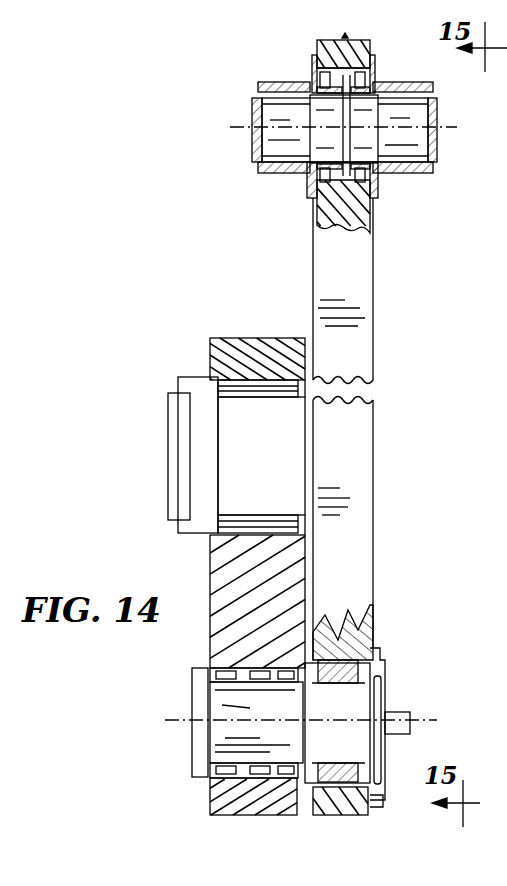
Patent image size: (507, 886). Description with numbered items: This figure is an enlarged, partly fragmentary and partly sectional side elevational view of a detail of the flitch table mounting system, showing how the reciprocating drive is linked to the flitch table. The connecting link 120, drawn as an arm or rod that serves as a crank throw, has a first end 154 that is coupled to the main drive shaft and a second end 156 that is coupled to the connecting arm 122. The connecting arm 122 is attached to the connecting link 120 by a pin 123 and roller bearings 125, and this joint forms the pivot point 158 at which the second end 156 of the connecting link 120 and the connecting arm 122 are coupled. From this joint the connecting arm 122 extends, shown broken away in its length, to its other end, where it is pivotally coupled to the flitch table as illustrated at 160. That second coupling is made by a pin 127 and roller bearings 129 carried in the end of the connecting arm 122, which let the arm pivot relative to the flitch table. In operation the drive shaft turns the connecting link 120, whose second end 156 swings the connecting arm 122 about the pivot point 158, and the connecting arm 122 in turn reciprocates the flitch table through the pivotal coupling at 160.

The connecting link 120 is at (200, 570).
The connecting arm 122 is at (360, 290).
The pin 123 is at (255, 740).
The roller bearings 125 is at (352, 628).
The pin 127 is at (403, 110).
The roller bearings 129 is at (318, 82).
The first end 154 is at (200, 355).
The second end 156 is at (190, 800).
The pivot point 158 is at (262, 717).
The pivotal coupling 160 is at (403, 127).